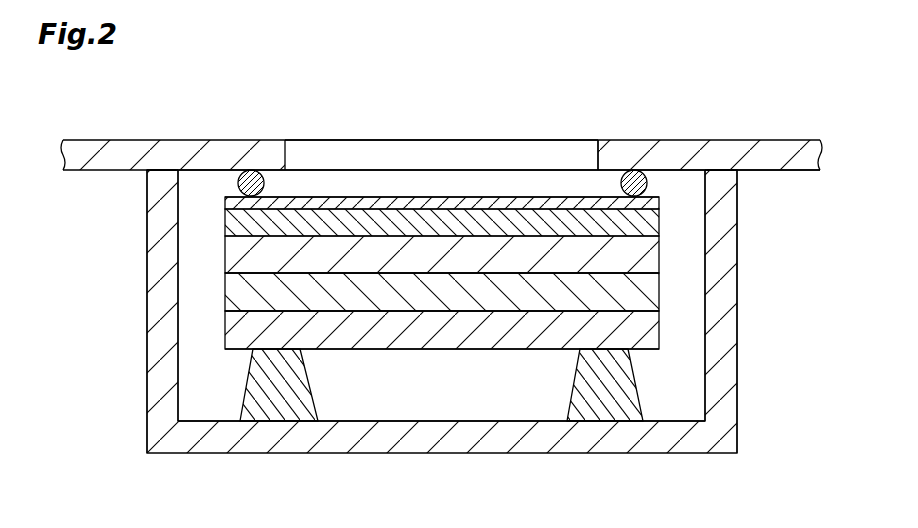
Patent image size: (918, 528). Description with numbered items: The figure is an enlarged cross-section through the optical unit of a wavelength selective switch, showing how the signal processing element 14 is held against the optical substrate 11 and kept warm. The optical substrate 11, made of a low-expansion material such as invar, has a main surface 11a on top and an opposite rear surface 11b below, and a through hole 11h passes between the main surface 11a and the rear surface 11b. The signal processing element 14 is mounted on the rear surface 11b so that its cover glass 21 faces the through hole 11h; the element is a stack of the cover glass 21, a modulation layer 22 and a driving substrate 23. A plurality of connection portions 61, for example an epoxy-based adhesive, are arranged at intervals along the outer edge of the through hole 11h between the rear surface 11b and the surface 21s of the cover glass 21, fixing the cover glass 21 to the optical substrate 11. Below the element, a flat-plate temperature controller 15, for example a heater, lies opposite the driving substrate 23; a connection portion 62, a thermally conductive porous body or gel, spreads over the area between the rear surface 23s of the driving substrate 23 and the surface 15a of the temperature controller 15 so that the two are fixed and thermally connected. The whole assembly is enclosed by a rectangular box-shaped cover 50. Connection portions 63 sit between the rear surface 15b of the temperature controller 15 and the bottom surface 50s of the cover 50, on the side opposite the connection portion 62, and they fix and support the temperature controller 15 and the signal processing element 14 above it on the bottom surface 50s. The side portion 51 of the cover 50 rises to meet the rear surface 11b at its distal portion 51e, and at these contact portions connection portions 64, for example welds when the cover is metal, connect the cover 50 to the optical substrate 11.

The optical substrate 11 is at (804, 148).
The main surface 11a is at (760, 140).
The rear surface 11b is at (808, 172).
The through hole 11h is at (600, 150).
The signal processing element 14 is at (364, 189).
The temperature controller 15 is at (468, 340).
The surface of the temperature controller 15a is at (414, 311).
The rear surface of the temperature controller 15b is at (353, 351).
The cover glass 21 is at (225, 200).
The surface of the cover glass 21s is at (353, 196).
The modulation layer 22 is at (225, 222).
The driving substrate 23 is at (225, 248).
The rear surface of the driving substrate 23s is at (470, 273).
The cover 50 is at (703, 454).
The bottom surface of the cover 50s is at (437, 422).
The side portion 51 is at (152, 376).
The distal portion 51e is at (152, 193).
The connection portion (first connection portion) 61 is at (250, 170).
The connection portion (second connection portion) 62 is at (225, 293).
The connection portion (third connection portion) 63 is at (282, 410).
The connection portion (fourth connection portion) 64 is at (168, 168).